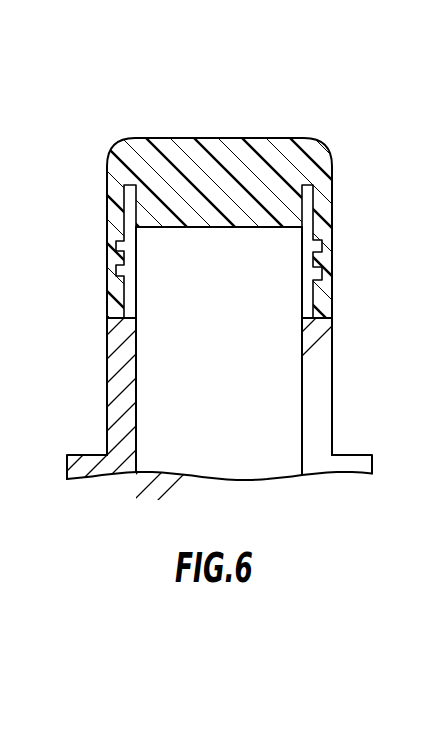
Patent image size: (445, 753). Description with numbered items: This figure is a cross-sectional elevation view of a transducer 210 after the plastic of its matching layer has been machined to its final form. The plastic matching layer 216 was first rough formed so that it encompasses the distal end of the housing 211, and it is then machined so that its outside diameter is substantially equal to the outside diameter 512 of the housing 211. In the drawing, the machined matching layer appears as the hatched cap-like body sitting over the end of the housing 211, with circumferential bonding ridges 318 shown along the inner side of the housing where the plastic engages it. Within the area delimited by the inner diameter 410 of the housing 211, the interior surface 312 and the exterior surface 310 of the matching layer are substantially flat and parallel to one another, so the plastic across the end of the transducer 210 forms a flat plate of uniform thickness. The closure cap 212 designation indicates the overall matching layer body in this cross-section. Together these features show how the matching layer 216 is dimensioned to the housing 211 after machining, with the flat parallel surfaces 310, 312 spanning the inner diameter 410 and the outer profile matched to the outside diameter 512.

The transducer 210 is at (86, 489).
The housing 211 is at (337, 463).
The closure cap 212 is at (234, 127).
The plastic matching layer 216 is at (292, 173).
The exterior surface 310 is at (200, 138).
The interior surface 312 is at (218, 229).
The circumferential bonding ridges 318 is at (320, 268).
The inner diameter 410 is at (300, 328).
The outside diameter 512 is at (330, 381).